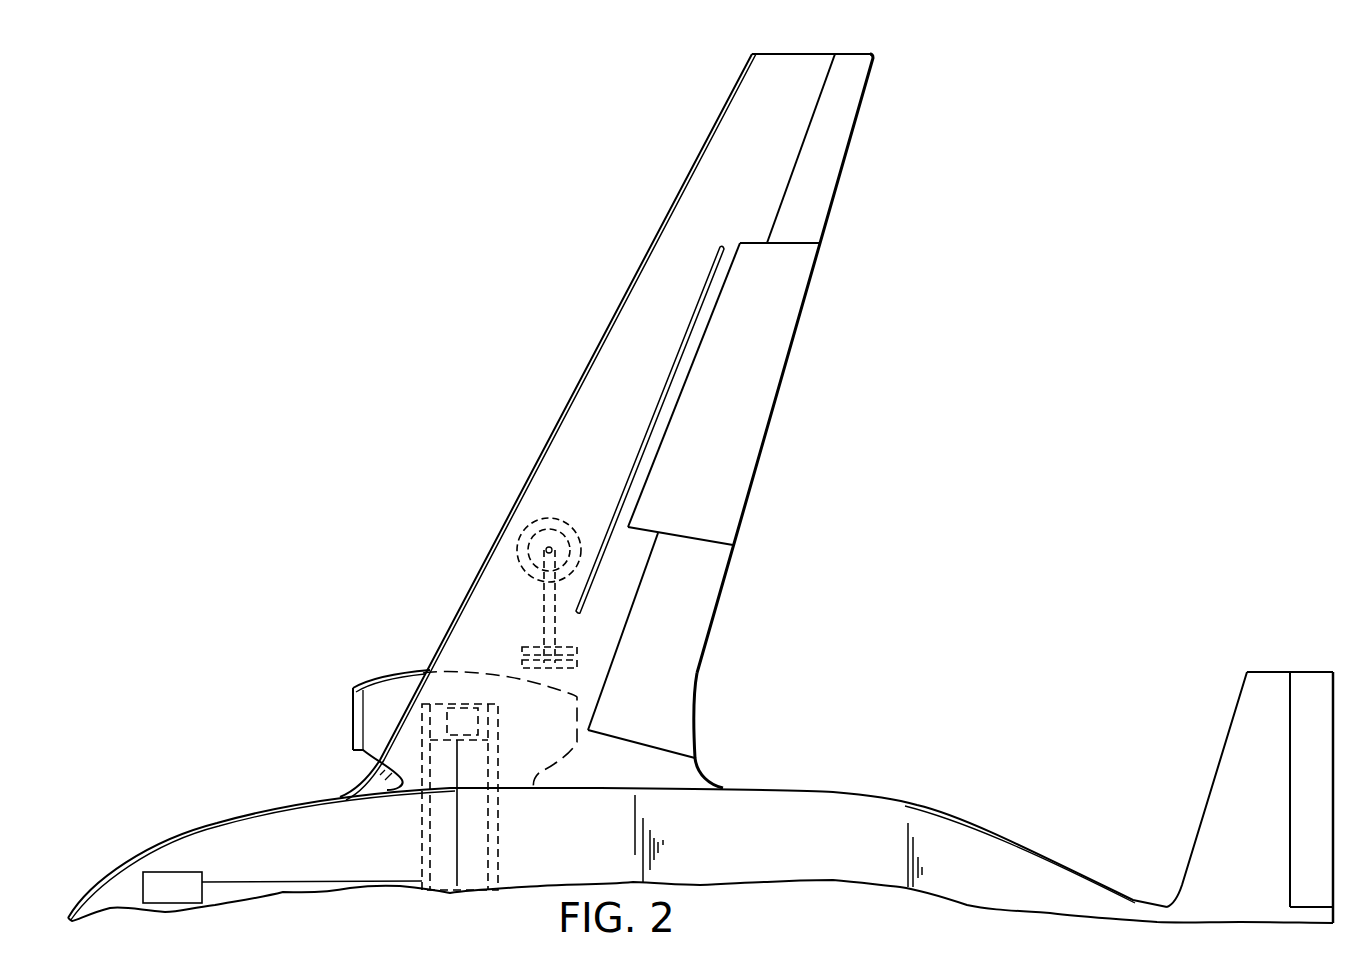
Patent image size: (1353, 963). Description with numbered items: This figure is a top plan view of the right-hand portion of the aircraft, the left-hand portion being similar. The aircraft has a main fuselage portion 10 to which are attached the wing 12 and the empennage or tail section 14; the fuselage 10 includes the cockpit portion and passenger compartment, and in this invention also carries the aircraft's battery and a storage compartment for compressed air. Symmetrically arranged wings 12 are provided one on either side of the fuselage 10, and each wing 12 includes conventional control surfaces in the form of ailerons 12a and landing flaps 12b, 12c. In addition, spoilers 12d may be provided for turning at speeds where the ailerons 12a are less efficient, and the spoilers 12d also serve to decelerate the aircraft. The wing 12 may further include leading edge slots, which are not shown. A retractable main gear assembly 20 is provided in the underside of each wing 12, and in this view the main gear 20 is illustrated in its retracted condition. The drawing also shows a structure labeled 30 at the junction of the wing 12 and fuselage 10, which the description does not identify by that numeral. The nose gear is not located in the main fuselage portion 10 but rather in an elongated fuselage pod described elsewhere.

The main fuselage portion 10 is at (262, 812).
The wing 12 is at (597, 348).
The aileron 12a is at (857, 123).
The landing flap 12b is at (795, 332).
The landing flap 12c is at (707, 653).
The spoiler 12d is at (697, 300).
The empennage or tail section 14 is at (1203, 817).
The retractable main gear assembly 20 is at (542, 607).
The wing fairing 30 is at (387, 677).